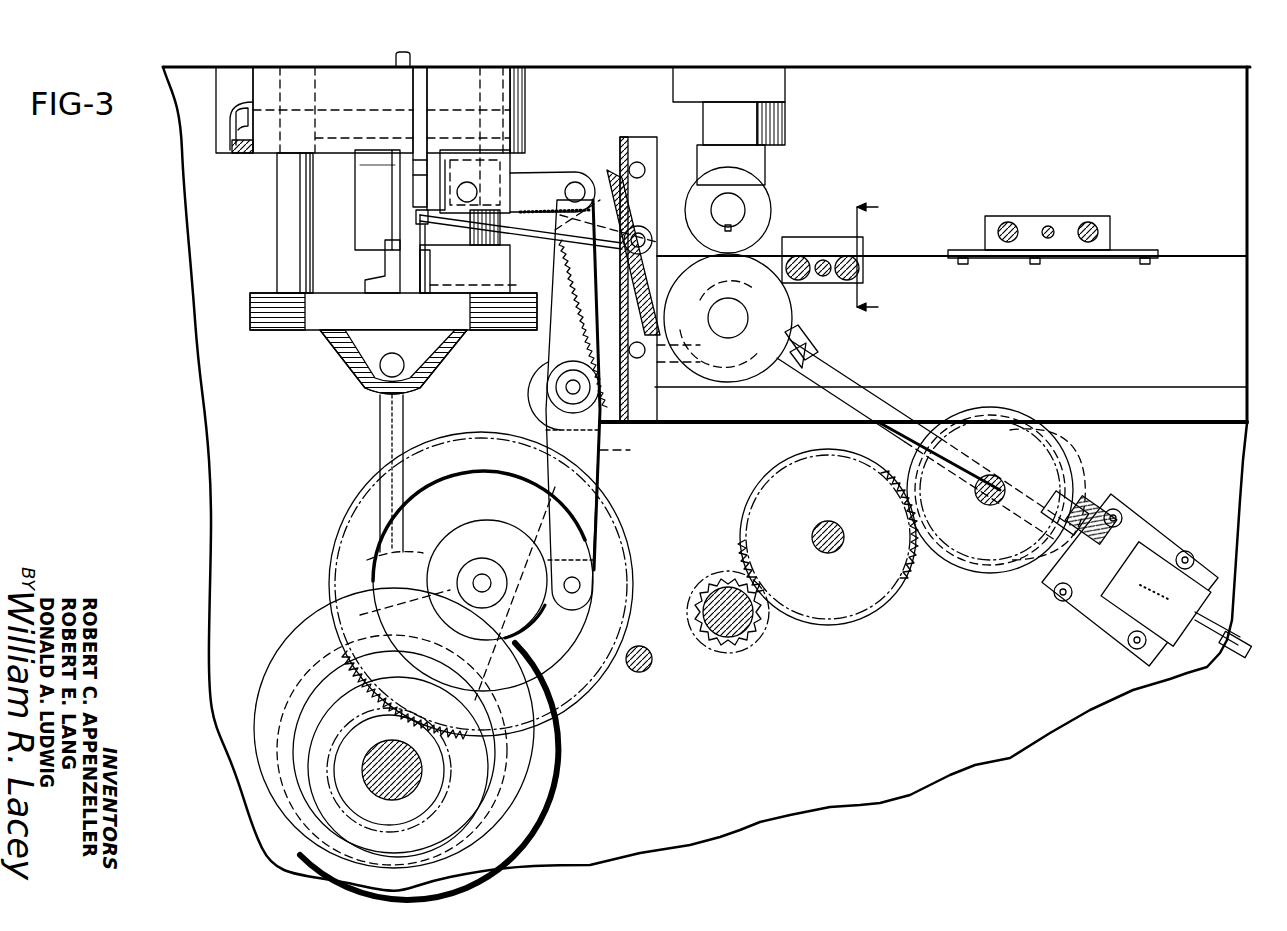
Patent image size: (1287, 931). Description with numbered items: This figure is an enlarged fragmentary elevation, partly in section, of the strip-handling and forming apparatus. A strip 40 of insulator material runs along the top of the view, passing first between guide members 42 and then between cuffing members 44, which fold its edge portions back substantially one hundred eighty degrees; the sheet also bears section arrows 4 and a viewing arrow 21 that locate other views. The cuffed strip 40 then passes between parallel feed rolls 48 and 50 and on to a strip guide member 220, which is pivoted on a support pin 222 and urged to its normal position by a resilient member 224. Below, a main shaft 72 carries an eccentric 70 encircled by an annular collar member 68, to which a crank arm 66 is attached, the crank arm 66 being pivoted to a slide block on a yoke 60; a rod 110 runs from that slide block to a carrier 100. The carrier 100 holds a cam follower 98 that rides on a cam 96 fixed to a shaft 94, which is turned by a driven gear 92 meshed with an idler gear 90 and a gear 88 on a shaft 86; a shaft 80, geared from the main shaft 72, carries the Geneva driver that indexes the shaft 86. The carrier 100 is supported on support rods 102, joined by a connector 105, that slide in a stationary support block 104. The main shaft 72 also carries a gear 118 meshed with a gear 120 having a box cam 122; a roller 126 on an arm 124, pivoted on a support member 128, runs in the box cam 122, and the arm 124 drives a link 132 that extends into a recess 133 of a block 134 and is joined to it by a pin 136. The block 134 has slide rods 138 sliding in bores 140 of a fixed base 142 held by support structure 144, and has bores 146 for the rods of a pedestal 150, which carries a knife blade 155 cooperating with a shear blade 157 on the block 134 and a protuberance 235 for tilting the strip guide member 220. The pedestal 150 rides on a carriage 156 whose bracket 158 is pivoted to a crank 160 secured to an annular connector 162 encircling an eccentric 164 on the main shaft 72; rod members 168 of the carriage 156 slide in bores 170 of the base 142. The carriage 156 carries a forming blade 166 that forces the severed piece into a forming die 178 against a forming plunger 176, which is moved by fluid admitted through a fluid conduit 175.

The support structure 144 is at (229, 72).
The bore 140 is at (258, 152).
The fixed base 142 is at (345, 75).
The bore 170 is at (288, 80).
The fluid conduit 175 is at (406, 60).
The slide rod 138 is at (420, 110).
The block 134 is at (462, 72).
The bore 146 is at (515, 67).
The recess 133 is at (452, 159).
The pin 136 is at (470, 192).
The forming plunger 176 is at (388, 160).
The forming die 178 is at (368, 176).
The rod member 168 is at (280, 233).
The forming blade 166 is at (388, 245).
The shear blade 157 is at (425, 238).
The knife blade 155 is at (470, 254).
The protuberance 235 is at (462, 232).
The pedestal 150 is at (428, 290).
The carriage 156 is at (272, 325).
The bracket 158 is at (350, 355).
The crank 160 is at (380, 443).
The link 132 is at (572, 172).
The strip guide member 220 is at (568, 188).
The arm 124 is at (548, 355).
The resilient member 224 is at (545, 335).
The support member 128 is at (566, 388).
The roller 126 is at (592, 590).
The crank arm 66 is at (605, 452).
The yoke 60 is at (657, 200).
The support pin 222 is at (686, 258).
The feed roll 48 is at (765, 205).
The feed roll 50 is at (745, 368).
The rod 110 is at (828, 375).
The cuffing member 44 is at (812, 242).
The strip 40 is at (930, 255).
The guide member 42 is at (1035, 218).
The section line 4- 4 is at (876, 260).
The idler gear 90 is at (878, 600).
The shaft 94 is at (980, 495).
The driven gear 92 is at (978, 572).
The cam 96 is at (1075, 452).
The cam follower 98 is at (1078, 486).
The carrier 100 is at (1115, 520).
The stationary support block 104 is at (1160, 560).
The connector 105 is at (1238, 662).
The support rod 102 is at (1185, 672).
The view direction arrow 21 is at (1200, 697).
The shaft 86 is at (728, 640).
The gear 88 is at (762, 622).
The shaft 80 is at (645, 672).
The gear 120 is at (362, 512).
The box cam 122 is at (490, 485).
The gear 118 is at (427, 725).
The annular connector 162 is at (308, 625).
The eccentric 164 is at (310, 676).
The annular collar member 68 is at (520, 796).
The eccentric 70 is at (538, 772).
The main shaft 72 is at (392, 760).